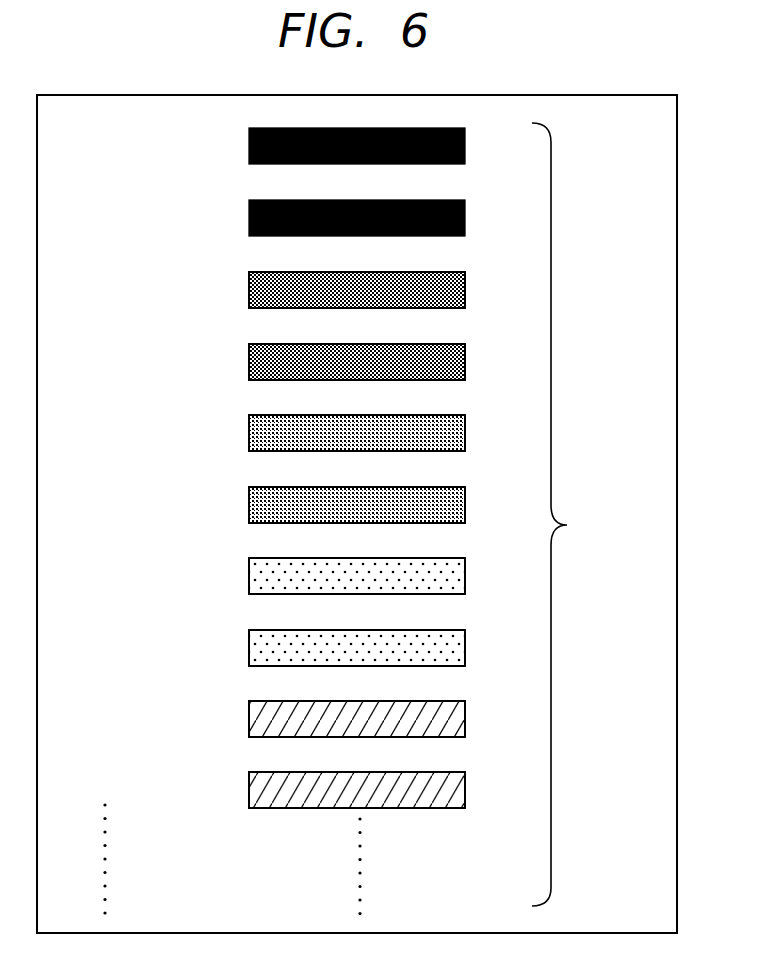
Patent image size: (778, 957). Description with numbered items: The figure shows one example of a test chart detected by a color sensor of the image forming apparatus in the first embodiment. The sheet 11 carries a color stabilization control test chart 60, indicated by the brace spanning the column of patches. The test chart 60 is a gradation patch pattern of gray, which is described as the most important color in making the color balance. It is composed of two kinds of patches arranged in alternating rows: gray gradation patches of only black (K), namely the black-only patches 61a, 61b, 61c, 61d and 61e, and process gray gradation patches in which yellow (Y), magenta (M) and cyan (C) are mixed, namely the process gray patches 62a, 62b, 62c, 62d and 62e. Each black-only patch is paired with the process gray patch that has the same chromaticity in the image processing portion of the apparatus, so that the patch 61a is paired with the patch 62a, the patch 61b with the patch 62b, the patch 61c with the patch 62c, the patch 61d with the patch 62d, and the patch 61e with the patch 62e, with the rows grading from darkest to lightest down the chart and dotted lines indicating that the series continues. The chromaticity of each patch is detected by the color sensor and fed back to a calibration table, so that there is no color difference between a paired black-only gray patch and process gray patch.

The display device 11 is at (648, 190).
The color stabilization control test chart 60 is at (566, 514).
The gray gradation patch of only black 61a is at (234, 148).
The process gray gradation patch 62a is at (234, 220).
The gray gradation patch of only black 61b is at (234, 292).
The process gray gradation patch 62b is at (234, 364).
The gray gradation patch of only black 61c is at (234, 435).
The process gray gradation patch 62c is at (234, 507).
The gray gradation patch of only black 61d is at (234, 578).
The process gray gradation patch 62d is at (234, 650).
The gray gradation patch of only black 61e is at (234, 721).
The process gray gradation patch 62e is at (234, 792).